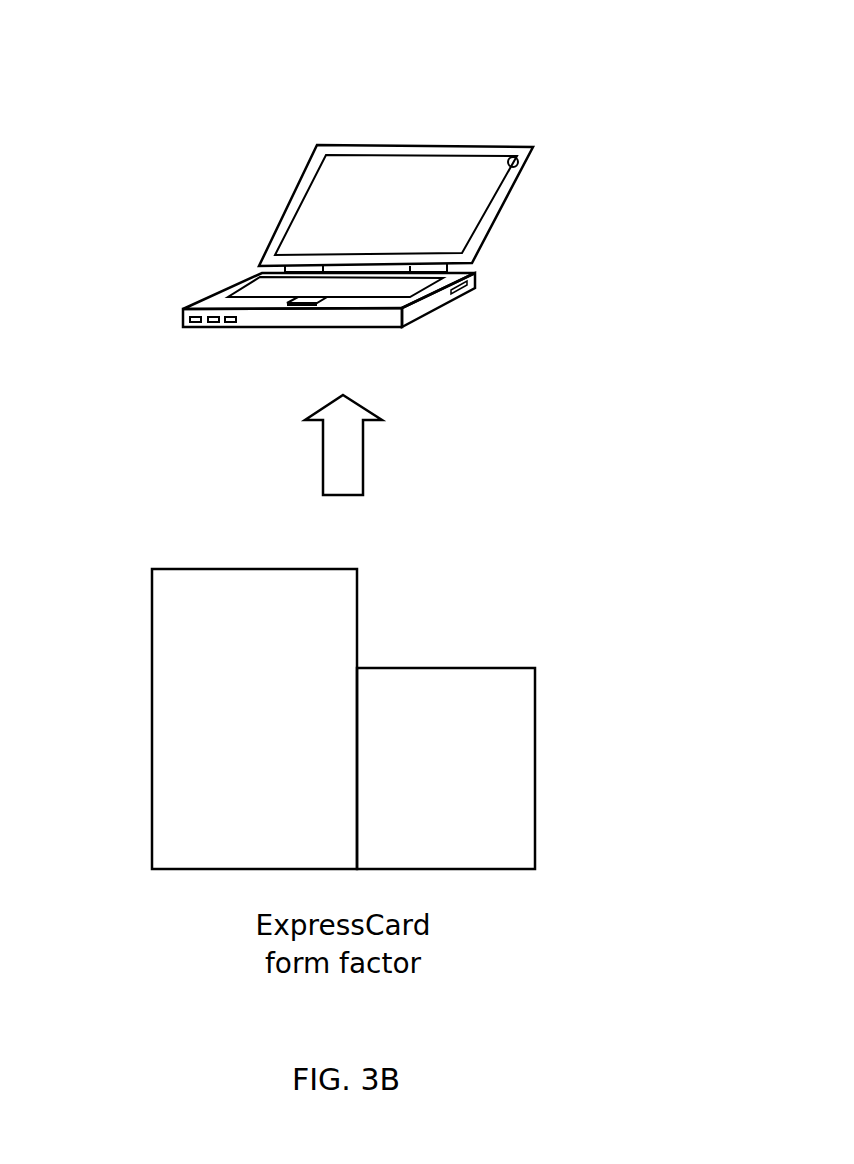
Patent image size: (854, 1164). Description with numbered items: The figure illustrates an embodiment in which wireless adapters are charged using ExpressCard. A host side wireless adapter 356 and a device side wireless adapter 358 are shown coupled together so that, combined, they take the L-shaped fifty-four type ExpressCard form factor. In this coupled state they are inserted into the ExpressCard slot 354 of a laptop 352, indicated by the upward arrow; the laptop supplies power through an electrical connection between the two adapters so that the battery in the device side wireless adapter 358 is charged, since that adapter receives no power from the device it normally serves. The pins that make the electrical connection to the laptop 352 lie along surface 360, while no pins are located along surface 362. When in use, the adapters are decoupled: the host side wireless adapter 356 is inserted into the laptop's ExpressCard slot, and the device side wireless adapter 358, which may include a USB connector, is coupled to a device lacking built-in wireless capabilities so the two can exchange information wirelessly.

The laptop 352 is at (377, 60).
The ExpressCard slot 354 is at (472, 286).
The host side wireless adapter 356 is at (152, 717).
The device side wireless adapter 358 is at (535, 788).
The surface 360 is at (270, 527).
The surface 362 is at (430, 637).